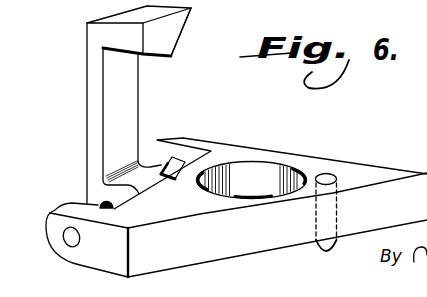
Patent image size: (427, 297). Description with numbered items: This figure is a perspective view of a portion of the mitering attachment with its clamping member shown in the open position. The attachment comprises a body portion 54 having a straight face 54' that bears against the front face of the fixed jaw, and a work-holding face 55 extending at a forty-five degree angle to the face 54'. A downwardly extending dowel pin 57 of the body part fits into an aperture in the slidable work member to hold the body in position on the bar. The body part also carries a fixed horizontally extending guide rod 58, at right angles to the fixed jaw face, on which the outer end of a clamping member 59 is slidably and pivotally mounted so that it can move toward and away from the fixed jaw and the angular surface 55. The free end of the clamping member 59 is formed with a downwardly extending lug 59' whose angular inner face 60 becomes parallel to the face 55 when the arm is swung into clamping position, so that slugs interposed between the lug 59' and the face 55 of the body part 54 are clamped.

The body portion 54 is at (236, 207).
The straight face 54' is at (305, 152).
The work-holding face 55 is at (233, 245).
The dowel pin 57 is at (321, 250).
The guide rod 58 is at (164, 163).
The clamping member 59 is at (86, 113).
The lug 59' is at (172, 31).
The angular inner face 60 is at (174, 50).